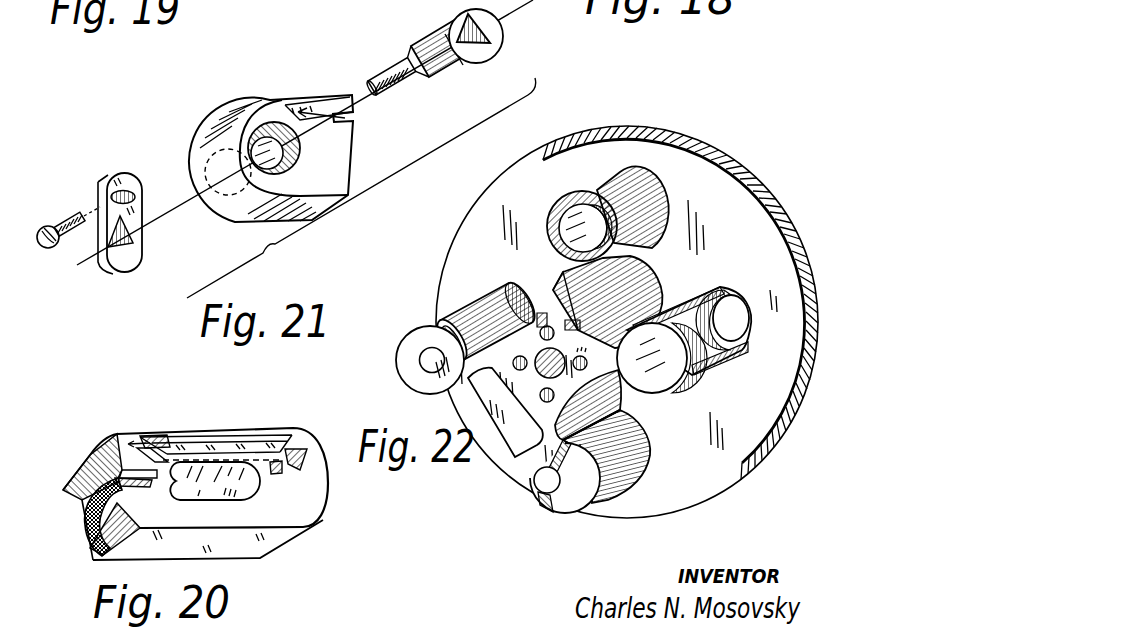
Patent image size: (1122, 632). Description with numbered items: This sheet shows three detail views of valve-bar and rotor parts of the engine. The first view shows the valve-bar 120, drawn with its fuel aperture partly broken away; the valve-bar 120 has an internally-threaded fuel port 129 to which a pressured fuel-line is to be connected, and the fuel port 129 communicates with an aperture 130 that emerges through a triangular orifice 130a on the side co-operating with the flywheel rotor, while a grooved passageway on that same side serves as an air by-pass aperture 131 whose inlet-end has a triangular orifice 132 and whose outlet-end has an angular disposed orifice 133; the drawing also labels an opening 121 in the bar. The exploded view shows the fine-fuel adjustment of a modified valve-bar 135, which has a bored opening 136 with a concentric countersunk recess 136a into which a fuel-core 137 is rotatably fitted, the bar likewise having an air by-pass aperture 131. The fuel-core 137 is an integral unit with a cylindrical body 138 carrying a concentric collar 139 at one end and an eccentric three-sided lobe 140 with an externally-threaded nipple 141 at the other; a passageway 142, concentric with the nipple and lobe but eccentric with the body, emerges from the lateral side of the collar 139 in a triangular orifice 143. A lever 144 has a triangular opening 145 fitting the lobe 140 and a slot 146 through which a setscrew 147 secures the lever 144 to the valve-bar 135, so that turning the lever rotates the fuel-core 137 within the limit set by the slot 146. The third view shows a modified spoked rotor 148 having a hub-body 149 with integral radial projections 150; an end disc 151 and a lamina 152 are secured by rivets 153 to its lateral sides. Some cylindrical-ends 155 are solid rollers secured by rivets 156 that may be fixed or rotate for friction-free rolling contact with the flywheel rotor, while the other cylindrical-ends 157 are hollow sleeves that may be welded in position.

In FIG. 20, the valve-bar 120 is at (200, 485).
In FIG. 20, the slot opening 121 is at (252, 488).
In FIG. 20, the fuel port 129 is at (88, 528).
In FIG. 20, the aperture 130 is at (152, 456).
In FIG. 20, the triangular orifice 130a is at (143, 485).
In FIG. 21, the air by-pass aperture 131 is at (338, 121).
In FIG. 20, the air by-pass aperture 131 is at (243, 428).
In FIG. 20, the triangular orifice 132 is at (143, 443).
In FIG. 20, the angular disposed orifice 133 is at (302, 445).
In FIG. 21, the modified valve-bar 135 is at (288, 147).
In FIG. 21, the bored opening 136 is at (287, 183).
In FIG. 21, the countersunk recess 136a is at (302, 162).
In FIG. 21, the fuel-core 137 is at (500, 50).
In FIG. 21, the cylindrical body 138 is at (455, 68).
In FIG. 21, the collar 139 is at (447, 31).
In FIG. 21, the three-sided lobe 140 is at (412, 62).
In FIG. 21, the externally-threaded nipple 141 is at (390, 69).
In FIG. 21, the passageway 142 is at (480, 12).
In FIG. 21, the triangular orifice 143 is at (490, 10).
In FIG. 21, the lever 144 is at (138, 210).
In FIG. 21, the triangular opening 145 is at (140, 240).
In FIG. 21, the slot 146 is at (135, 197).
In FIG. 21, the setscrew 147 is at (50, 244).
In FIG. 22, the rotor 148 is at (755, 192).
In FIG. 22, the hub-body 149 is at (641, 277).
In FIG. 22, the radial projections 150 is at (633, 251).
In FIG. 22, the end disc 151 is at (760, 407).
In FIG. 22, the lamina 152 is at (513, 388).
In FIG. 22, the rivets 153 is at (538, 310).
In FIG. 22, the cylindrical-ends 155 is at (476, 284).
In FIG. 22, the rivets 156 is at (424, 355).
In FIG. 22, the cylindrical-ends 157 is at (563, 194).